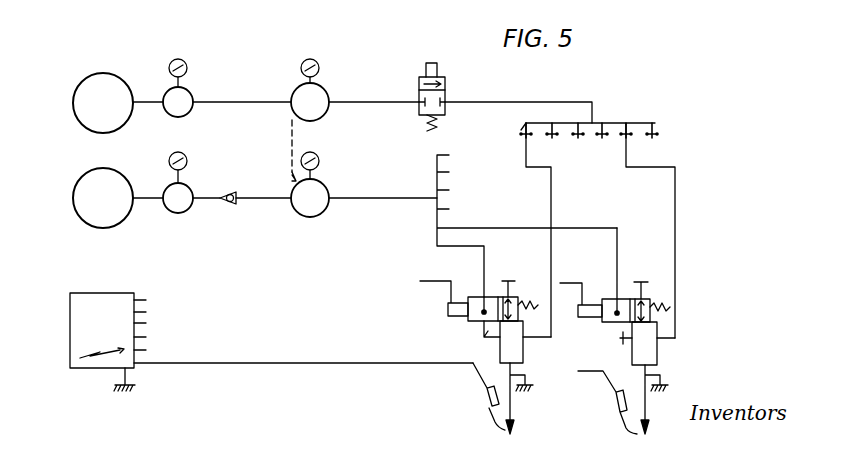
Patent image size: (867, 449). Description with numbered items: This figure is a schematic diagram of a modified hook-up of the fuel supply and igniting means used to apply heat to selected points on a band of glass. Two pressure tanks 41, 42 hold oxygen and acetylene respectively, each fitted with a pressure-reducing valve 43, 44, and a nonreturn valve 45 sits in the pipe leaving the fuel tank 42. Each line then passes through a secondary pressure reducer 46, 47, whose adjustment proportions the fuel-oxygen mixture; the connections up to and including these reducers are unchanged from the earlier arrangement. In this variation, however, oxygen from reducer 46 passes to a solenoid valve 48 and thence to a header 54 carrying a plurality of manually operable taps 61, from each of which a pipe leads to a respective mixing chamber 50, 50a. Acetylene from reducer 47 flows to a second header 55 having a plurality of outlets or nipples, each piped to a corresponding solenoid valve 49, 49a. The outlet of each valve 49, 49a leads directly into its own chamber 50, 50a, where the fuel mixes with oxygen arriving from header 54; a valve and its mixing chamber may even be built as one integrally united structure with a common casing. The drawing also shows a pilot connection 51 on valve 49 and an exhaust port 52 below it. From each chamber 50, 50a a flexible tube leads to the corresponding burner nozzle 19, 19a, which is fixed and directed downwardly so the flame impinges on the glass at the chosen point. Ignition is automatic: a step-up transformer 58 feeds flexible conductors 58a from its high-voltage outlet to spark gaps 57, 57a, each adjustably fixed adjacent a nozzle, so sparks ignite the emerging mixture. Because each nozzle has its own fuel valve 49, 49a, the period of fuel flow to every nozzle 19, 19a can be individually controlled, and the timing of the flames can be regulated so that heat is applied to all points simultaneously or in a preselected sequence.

The pressure tank 41 is at (126, 120).
The pressure tank 42 is at (126, 215).
The pressure-reducing valve 43 is at (187, 110).
The pressure-reducing valve 44 is at (187, 192).
The nonreturn valve 45 is at (229, 207).
The secondary pressure reducer 46 is at (327, 95).
The secondary pressure reducer 47 is at (313, 217).
The solenoid valve 48 is at (446, 92).
The solenoid valve 49 is at (470, 313).
The solenoid valve 49a is at (610, 299).
The mixing chamber 50 is at (524, 351).
The mixing chamber 50a is at (630, 371).
The pilot connection 51 is at (510, 280).
The exhaust port 52 is at (480, 340).
The header 54 is at (626, 122).
The header 55 is at (437, 220).
The spark gap 57 is at (479, 398).
The spark gap 57a is at (612, 394).
The step-up transformer 58 is at (135, 313).
The flexible conductor 58a is at (303, 351).
The manually operable tap 61 is at (518, 133).
The burner nozzle 19 is at (516, 425).
The burner nozzle 19a is at (651, 425).